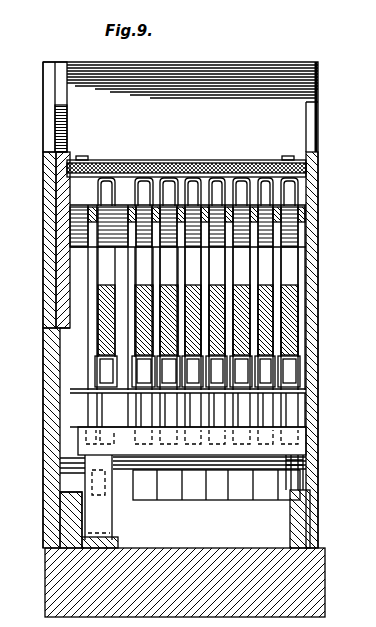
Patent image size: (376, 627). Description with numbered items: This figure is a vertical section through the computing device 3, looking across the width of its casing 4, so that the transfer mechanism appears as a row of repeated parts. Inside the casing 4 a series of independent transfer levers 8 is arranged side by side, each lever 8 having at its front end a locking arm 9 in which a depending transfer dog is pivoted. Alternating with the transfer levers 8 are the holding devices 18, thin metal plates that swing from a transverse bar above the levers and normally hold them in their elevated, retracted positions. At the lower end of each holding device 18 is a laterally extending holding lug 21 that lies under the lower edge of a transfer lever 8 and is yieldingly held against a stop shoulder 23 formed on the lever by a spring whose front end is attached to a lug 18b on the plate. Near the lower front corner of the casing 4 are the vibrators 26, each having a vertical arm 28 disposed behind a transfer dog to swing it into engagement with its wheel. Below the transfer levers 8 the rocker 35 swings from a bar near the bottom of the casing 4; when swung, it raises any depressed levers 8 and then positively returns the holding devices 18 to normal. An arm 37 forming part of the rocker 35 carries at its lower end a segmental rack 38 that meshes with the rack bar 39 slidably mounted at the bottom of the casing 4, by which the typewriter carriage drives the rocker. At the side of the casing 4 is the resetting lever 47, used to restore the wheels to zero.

The computing device 3 is at (318, 592).
The casing 4 is at (50, 434).
The transfer lever 8 is at (147, 335).
The locking arm 9 is at (127, 188).
The holding device 18 is at (97, 273).
The lug 18b is at (330, 220).
The holding lug 21 is at (302, 384).
The stop shoulder 23 is at (100, 398).
The vibrator 26 is at (150, 500).
The vertical arm 28 is at (138, 418).
The rocker 35 is at (300, 432).
The arm 37 is at (105, 512).
The segmental rack 38 is at (120, 540).
The rack bar 39 is at (186, 540).
The resetting lever 47 is at (68, 142).